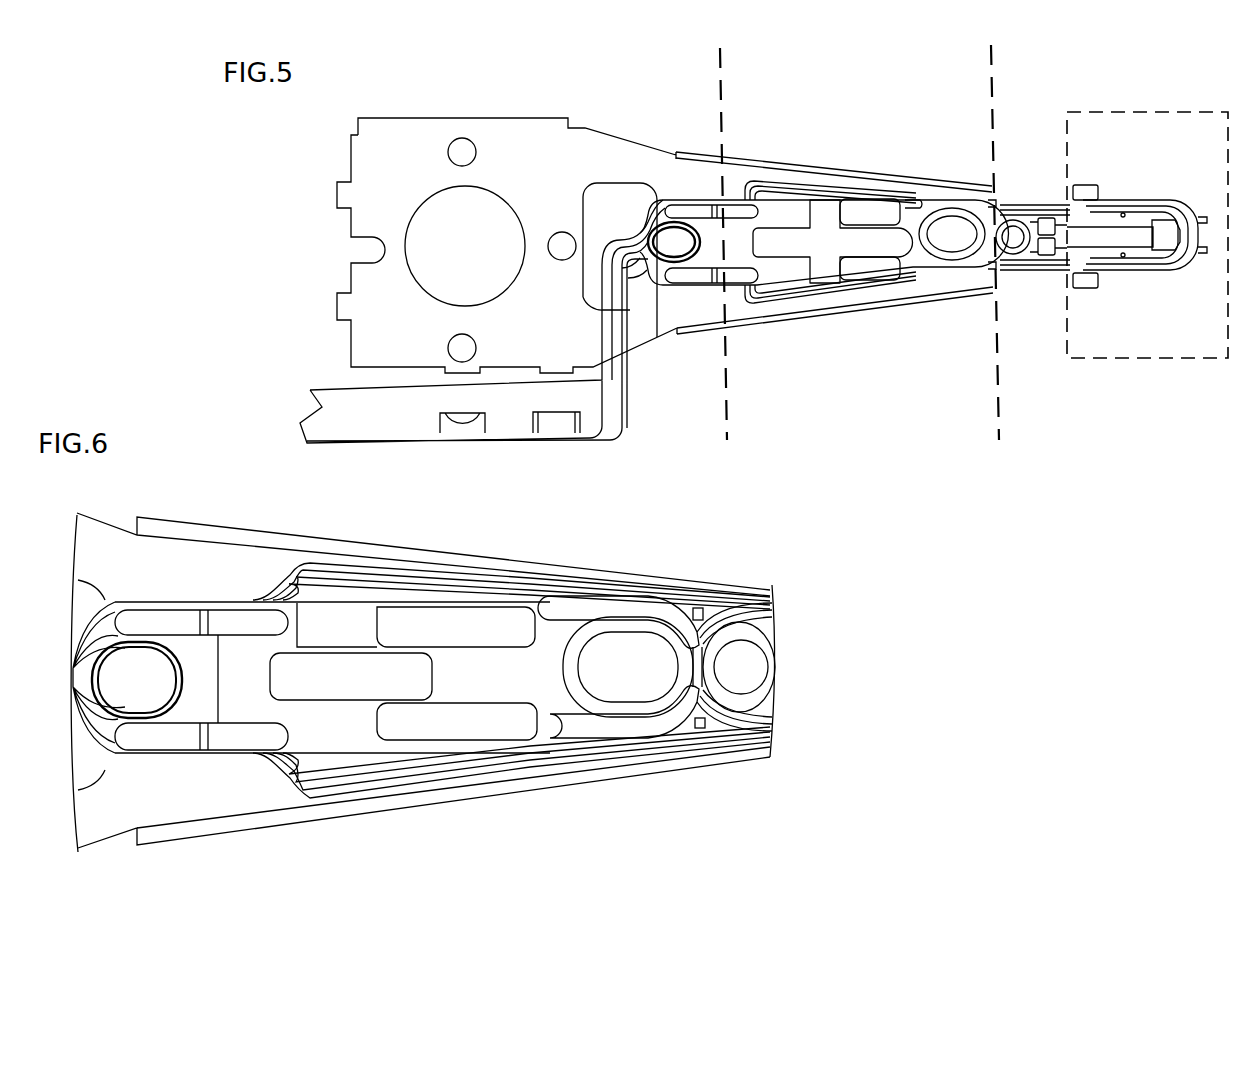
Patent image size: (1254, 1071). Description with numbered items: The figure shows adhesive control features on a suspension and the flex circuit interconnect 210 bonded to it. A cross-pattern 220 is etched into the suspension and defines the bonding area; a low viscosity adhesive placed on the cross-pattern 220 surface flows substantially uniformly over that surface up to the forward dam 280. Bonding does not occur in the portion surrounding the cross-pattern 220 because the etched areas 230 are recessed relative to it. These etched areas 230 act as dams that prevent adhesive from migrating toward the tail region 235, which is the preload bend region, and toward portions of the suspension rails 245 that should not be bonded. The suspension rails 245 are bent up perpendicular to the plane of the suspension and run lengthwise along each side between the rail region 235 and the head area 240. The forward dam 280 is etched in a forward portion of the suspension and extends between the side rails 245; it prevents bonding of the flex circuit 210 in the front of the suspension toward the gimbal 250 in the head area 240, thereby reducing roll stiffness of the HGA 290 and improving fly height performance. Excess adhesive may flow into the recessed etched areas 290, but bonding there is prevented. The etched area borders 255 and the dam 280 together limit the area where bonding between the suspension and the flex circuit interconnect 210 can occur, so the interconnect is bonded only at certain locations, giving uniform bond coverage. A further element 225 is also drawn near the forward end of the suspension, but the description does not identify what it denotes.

In FIG. 5, the flex circuit interconnect 210 is at (918, 197).
In FIG. 5, the cross-pattern 220 is at (870, 243).
In FIG. 6, the cross-pattern 220 is at (405, 678).
In FIG. 5, the connector block 225 is at (1045, 218).
In FIG. 5, the etched areas 230 is at (783, 272).
In FIG. 5, the tail region 235 is at (610, 118).
In FIG. 5, the head area 240 is at (1052, 105).
In FIG. 5, the suspension rails 245 is at (803, 162).
In FIG. 5, the gimbal 250 is at (1088, 186).
In FIG. 6, the etched area borders 255 is at (407, 738).
In FIG. 5, the forward dam 280 is at (1000, 258).
In FIG. 6, the forward dam 280 is at (700, 728).
In FIG. 5, the HGA 290 is at (1196, 118).
In FIG. 6, the HGA 290 is at (338, 598).